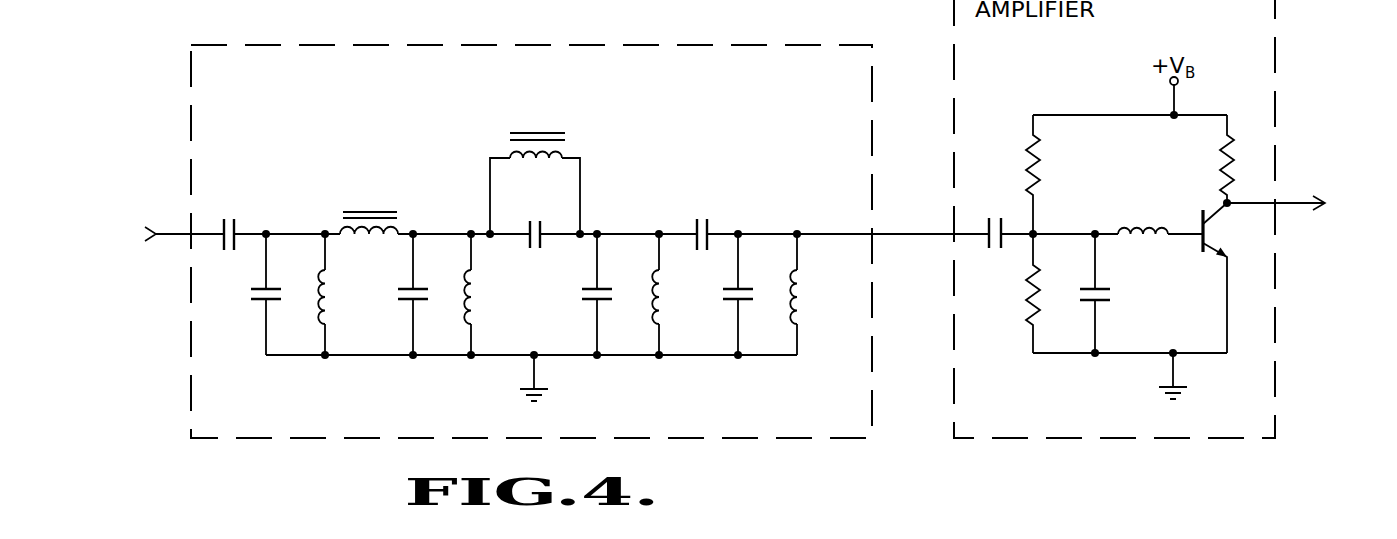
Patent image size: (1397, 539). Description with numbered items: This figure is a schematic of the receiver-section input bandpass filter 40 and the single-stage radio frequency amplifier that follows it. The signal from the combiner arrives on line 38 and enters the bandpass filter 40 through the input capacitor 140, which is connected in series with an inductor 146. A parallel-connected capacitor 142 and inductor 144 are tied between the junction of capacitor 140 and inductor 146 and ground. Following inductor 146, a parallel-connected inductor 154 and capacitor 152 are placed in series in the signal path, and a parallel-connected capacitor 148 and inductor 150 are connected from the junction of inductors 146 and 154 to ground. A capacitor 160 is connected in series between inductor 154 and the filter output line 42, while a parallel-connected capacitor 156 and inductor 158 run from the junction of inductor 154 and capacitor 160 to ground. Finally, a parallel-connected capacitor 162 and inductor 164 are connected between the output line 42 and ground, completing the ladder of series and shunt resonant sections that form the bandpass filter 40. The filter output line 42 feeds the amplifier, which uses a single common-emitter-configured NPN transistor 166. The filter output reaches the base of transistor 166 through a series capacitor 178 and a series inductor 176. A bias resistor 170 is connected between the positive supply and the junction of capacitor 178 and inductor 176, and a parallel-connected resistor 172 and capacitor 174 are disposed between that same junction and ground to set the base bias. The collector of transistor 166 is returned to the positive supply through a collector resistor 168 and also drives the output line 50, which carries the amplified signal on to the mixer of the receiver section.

The combiner output line 38 is at (175, 240).
The bandpass filter 40 is at (712, 44).
The filter output line 42 is at (928, 224).
The output line 50 is at (1296, 197).
The input capacitor 140 is at (231, 216).
The capacitor 142 is at (252, 297).
The inductor 144 is at (328, 300).
The inductor 146 is at (397, 207).
The capacitor 148 is at (400, 296).
The inductor 150 is at (474, 300).
The capacitor 152 is at (534, 246).
The inductor 154 is at (540, 133).
The capacitor 156 is at (580, 295).
The inductor 158 is at (662, 300).
The capacitor 160 is at (703, 216).
The capacitor 162 is at (722, 293).
The inductor 164 is at (800, 300).
The NPN transistor 166 is at (1204, 256).
The collector resistor 168 is at (1220, 163).
The bias resistor 170 is at (1044, 168).
The resistor 172 is at (1027, 300).
The capacitor 174 is at (1112, 296).
The series inductor 176 is at (1137, 220).
The series capacitor 178 is at (1000, 206).